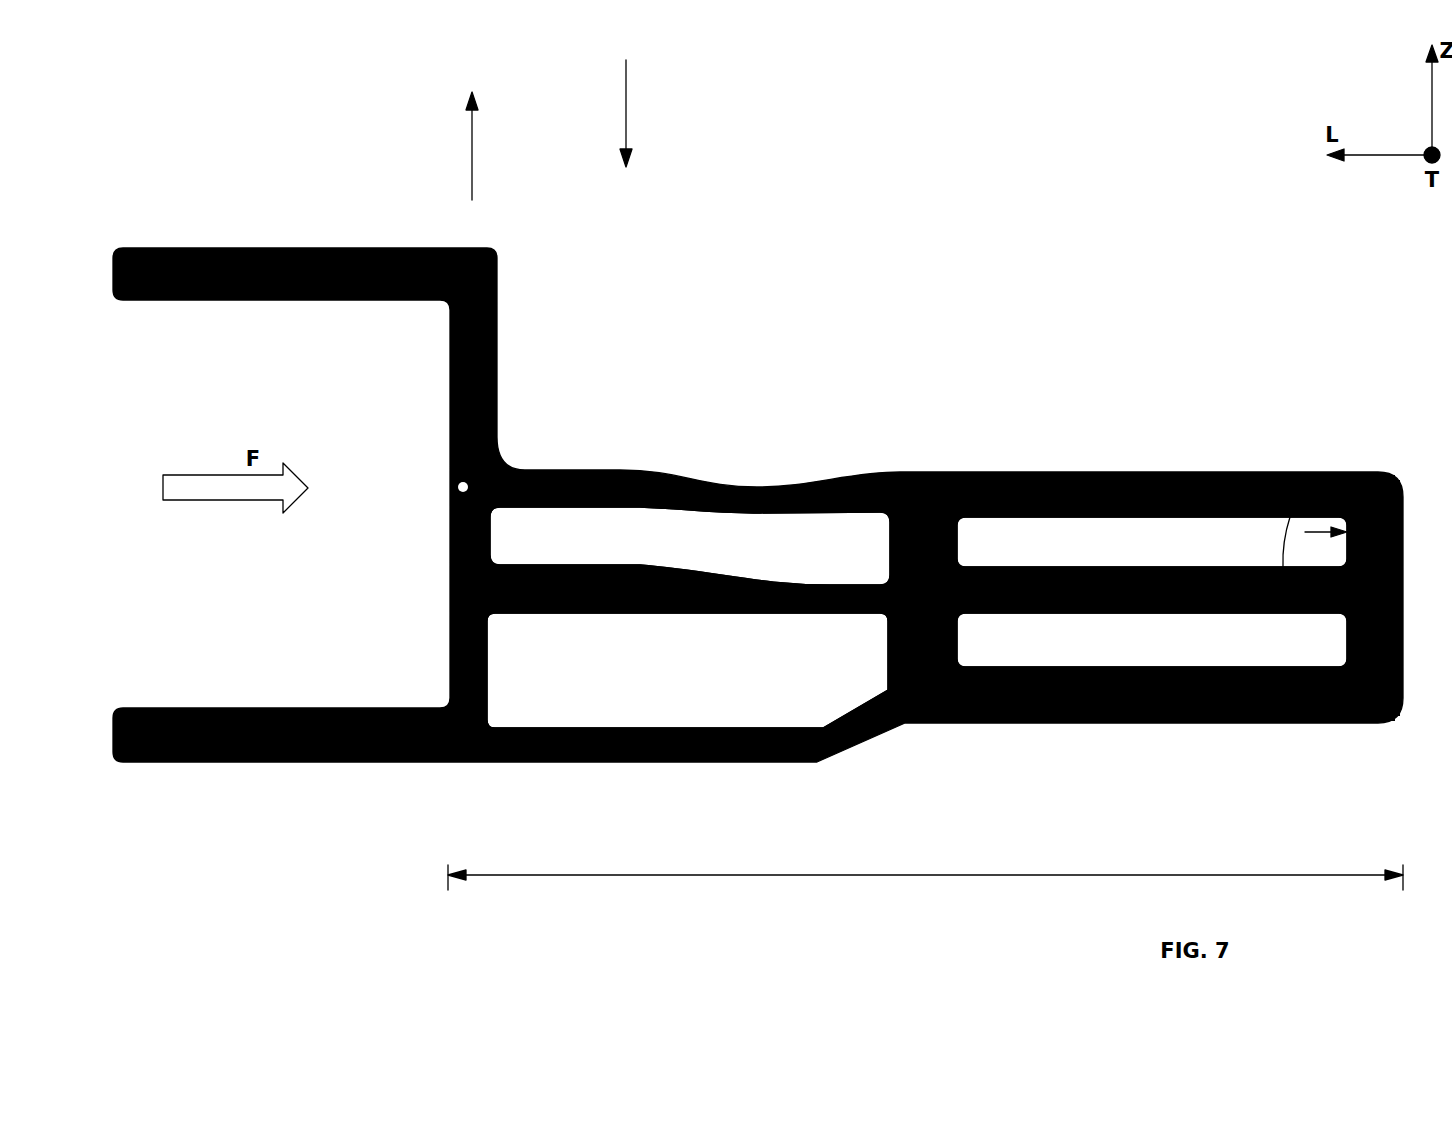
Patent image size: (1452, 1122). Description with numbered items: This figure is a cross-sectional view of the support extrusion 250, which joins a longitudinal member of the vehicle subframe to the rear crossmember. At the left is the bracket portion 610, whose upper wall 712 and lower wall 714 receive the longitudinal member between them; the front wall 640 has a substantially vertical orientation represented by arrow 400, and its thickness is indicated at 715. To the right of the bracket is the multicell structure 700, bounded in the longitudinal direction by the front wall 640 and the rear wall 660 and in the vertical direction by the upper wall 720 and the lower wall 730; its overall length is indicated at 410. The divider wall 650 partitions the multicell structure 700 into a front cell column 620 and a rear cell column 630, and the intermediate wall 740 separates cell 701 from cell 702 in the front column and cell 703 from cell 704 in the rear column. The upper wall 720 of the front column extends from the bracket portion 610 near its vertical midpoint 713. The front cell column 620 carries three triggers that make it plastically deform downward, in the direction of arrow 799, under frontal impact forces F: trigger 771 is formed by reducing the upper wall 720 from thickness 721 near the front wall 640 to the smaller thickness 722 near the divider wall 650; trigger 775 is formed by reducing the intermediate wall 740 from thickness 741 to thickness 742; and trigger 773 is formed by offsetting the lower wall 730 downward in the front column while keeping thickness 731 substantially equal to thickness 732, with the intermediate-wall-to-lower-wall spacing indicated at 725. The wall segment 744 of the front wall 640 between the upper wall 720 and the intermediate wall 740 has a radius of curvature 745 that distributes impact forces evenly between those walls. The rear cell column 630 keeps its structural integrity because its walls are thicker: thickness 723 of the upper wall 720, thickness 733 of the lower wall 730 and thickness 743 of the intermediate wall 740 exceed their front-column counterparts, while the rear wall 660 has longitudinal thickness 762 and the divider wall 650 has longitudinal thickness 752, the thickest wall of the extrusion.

The support extrusion 250 is at (1208, 98).
The arrow 400 is at (472, 128).
The length of energy absorbing member 410 is at (882, 877).
The bracket portion 610 is at (318, 172).
The front cell column 620 is at (708, 335).
The rear cell column 630 is at (1158, 335).
The front wall 640 is at (450, 372).
The divider wall 650 is at (960, 522).
The rear wall 660 is at (1345, 625).
The multicell structure 700 is at (1395, 218).
The cell 701 is at (694, 557).
The cell 702 is at (697, 681).
The cell 703 is at (1104, 553).
The cell 704 is at (1104, 649).
The upper wall 712 is at (360, 248).
The midpoint 713 is at (455, 488).
The lower wall 714 is at (255, 708).
The web thickness 715 is at (508, 643).
The upper wall 720 is at (1308, 472).
The thickness 721 is at (552, 460).
The thickness 722 is at (757, 475).
The thickness 723 is at (1040, 458).
The intermediate wall thickness 725 is at (603, 628).
The lower wall 730 is at (1285, 723).
The thickness 731 is at (537, 712).
The thickness 732 is at (822, 716).
The thickness 733 is at (1188, 640).
The intermediate wall 740 is at (1280, 472).
The thickness 741 is at (604, 552).
The thickness 742 is at (833, 575).
The thickness 743 is at (1190, 550).
The wall segment 744 is at (422, 505).
The radius of curvature 745 is at (512, 535).
The thickness 752 is at (835, 640).
The thickness 762 is at (1412, 533).
The trigger 771 is at (780, 458).
The trigger 773 is at (882, 766).
The trigger 775 is at (855, 577).
The arrow 799 is at (626, 100).